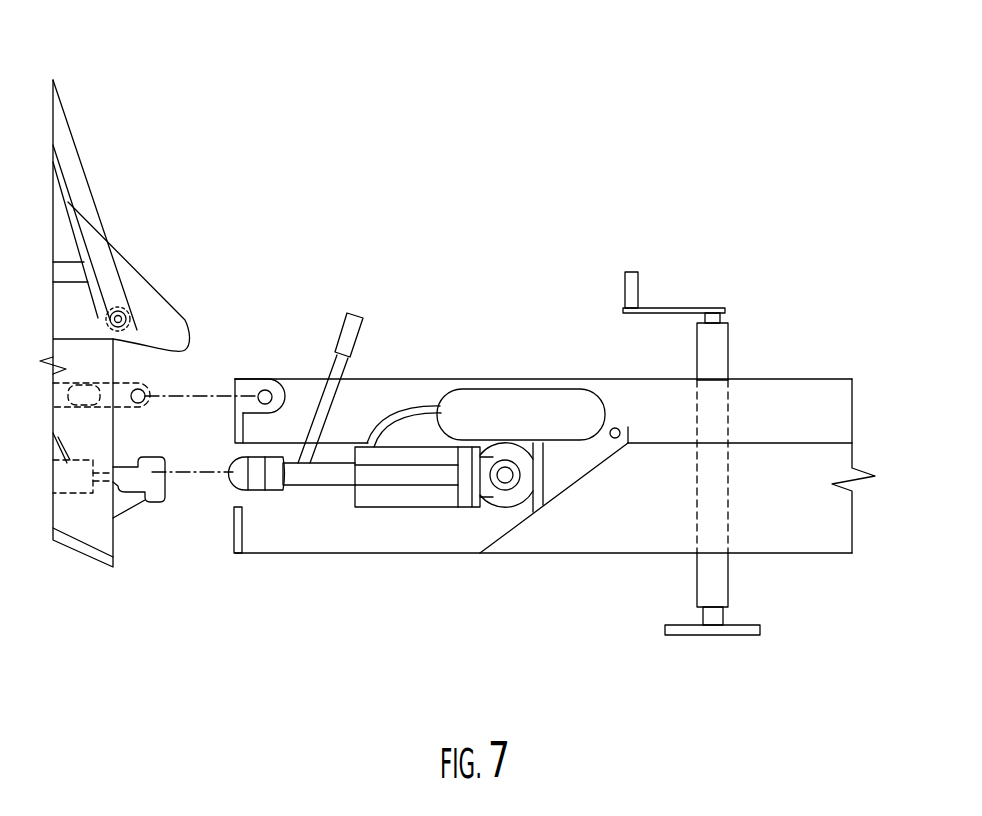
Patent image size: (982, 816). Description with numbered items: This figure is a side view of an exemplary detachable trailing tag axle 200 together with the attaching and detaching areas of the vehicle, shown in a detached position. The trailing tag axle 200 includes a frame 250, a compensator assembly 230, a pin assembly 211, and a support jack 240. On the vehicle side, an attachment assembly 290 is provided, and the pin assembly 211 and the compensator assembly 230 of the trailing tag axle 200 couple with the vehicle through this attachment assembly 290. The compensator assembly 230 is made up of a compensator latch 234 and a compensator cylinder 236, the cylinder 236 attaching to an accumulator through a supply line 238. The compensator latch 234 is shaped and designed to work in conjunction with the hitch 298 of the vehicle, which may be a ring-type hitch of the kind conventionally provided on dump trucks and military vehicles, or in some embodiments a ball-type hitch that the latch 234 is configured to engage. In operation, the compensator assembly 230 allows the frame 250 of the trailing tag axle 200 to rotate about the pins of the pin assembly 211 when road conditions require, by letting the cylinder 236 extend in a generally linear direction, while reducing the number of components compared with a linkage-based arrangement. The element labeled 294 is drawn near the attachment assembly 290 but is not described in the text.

The trailing tag axle 200 is at (498, 244).
The pin assembly 211 is at (215, 288).
The compensator assembly 230 is at (353, 580).
The compensator latch 234 is at (303, 400).
The compensator cylinder 236 is at (415, 507).
The supply line 238 is at (407, 403).
The support jack 240 is at (712, 347).
The frame 250 is at (813, 555).
The attachment assembly 290 is at (73, 596).
The pin 294 is at (117, 383).
The hitch 298 is at (142, 497).